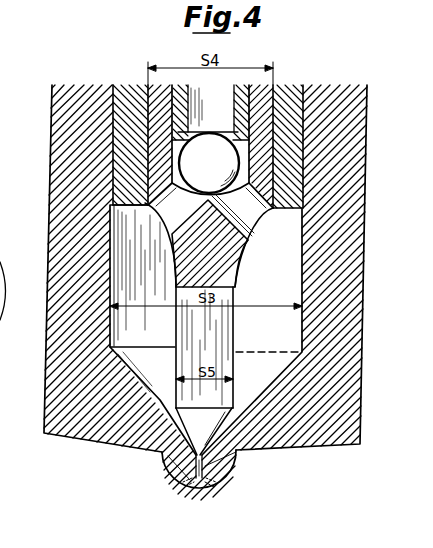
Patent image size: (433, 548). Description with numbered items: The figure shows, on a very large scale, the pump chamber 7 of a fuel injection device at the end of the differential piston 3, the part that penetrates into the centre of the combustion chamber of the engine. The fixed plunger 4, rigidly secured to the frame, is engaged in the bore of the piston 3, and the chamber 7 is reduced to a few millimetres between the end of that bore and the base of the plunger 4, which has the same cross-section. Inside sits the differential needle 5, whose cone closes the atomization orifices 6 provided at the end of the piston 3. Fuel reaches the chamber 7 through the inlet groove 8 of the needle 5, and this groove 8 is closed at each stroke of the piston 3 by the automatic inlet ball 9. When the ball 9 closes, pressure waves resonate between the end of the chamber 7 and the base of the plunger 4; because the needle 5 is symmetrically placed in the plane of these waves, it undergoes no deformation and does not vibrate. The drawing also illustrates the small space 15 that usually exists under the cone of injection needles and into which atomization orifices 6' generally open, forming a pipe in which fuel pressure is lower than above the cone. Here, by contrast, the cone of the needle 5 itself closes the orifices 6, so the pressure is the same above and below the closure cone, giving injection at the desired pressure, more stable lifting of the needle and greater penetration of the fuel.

The differential piston 3 is at (83, 162).
The fixed plunger 4 is at (283, 113).
The differential needle 5 is at (193, 250).
The atomization orifices 6 is at (172, 492).
The atomization orifices 6' is at (174, 494).
The pump chamber 7 is at (160, 342).
The inlet groove 8 is at (232, 121).
The inlet ball 9 is at (203, 147).
The small space 15 is at (211, 482).